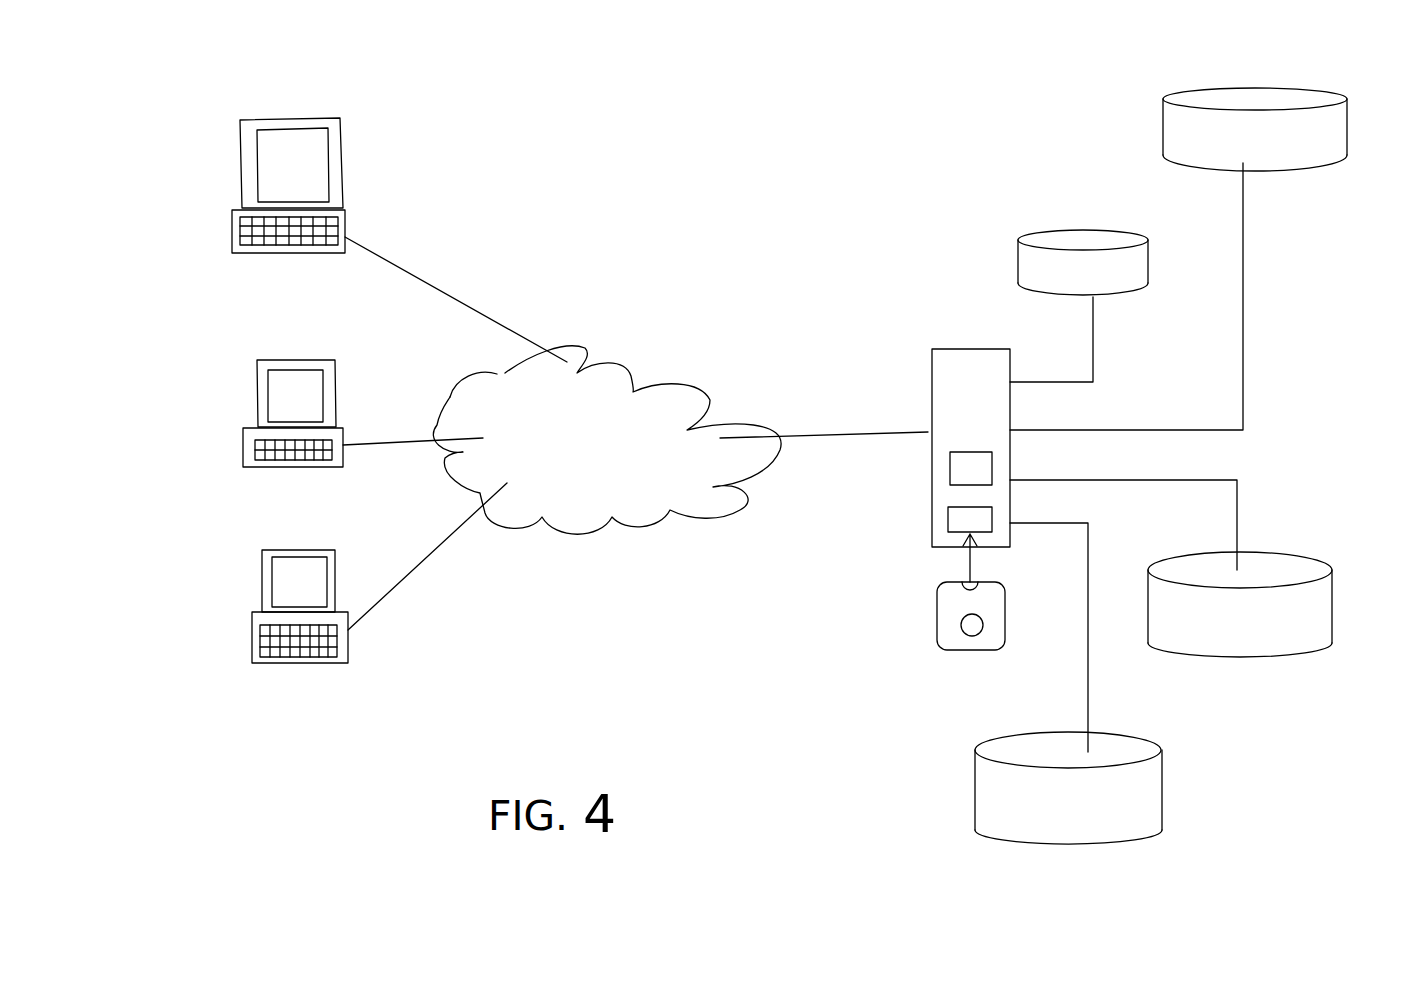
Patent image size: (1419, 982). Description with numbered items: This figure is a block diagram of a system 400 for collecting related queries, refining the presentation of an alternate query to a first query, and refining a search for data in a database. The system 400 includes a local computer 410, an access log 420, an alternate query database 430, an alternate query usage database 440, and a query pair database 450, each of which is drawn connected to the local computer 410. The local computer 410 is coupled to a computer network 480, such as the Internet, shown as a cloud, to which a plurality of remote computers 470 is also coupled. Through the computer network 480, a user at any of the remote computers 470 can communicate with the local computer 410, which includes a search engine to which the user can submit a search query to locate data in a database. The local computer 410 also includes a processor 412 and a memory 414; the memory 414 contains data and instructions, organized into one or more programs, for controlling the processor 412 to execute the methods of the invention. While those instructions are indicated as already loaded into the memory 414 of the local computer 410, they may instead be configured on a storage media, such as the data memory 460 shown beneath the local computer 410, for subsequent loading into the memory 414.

The system 400 is at (765, 221).
The local computer 410 is at (950, 365).
The processor 412 is at (950, 483).
The memory 414 is at (950, 527).
The access log 420 is at (1060, 235).
The alternate query database 430 is at (1247, 98).
The alternate query usage database 440 is at (1285, 568).
The query pair database 450 is at (990, 822).
The data memory 460 is at (950, 637).
The remote computers 470 is at (248, 132).
The computer network 480 is at (593, 502).